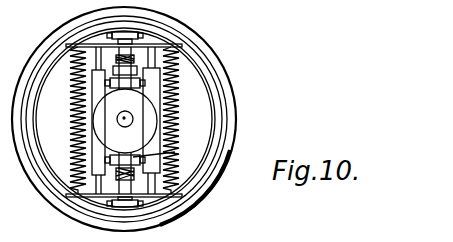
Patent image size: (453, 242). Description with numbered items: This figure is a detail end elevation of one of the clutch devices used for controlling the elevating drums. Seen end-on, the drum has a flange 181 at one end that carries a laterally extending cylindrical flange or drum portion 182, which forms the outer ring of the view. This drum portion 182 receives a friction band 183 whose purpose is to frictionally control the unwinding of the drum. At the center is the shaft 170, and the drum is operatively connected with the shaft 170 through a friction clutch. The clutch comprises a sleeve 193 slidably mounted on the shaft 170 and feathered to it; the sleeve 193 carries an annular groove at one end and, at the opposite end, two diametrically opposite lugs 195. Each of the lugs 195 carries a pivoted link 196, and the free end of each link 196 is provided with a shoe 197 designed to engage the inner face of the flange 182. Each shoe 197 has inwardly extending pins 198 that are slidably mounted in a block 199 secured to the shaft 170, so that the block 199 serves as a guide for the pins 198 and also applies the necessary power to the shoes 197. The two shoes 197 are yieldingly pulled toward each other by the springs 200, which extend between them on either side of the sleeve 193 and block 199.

The shaft 170 is at (133, 121).
The flange 181 is at (73, 120).
The cylindrical flange or drum portion 182 is at (95, 110).
The friction band 183 is at (209, 50).
The sleeve 193 is at (125, 121).
The lugs 195 is at (175, 152).
The pivoted link 196 is at (115, 64).
The shoe 197 is at (146, 43).
The pins 198 is at (168, 47).
The block 199 is at (150, 85).
The springs 200 is at (72, 134).